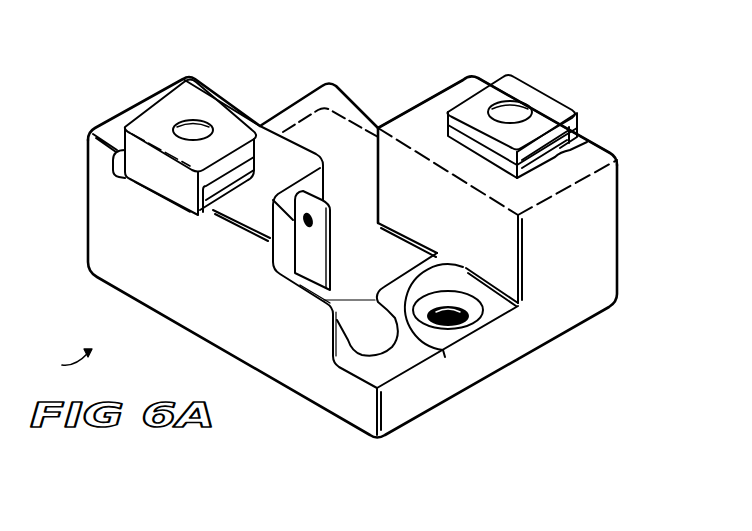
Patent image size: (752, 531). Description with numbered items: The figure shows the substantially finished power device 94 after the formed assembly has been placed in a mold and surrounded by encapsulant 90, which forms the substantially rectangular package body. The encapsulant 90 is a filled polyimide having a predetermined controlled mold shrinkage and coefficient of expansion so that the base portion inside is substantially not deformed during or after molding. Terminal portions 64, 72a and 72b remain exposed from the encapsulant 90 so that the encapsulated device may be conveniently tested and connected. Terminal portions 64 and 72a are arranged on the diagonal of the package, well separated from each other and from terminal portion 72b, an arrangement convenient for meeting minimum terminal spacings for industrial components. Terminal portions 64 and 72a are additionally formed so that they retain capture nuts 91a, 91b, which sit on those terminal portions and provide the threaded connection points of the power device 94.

The encapsulant 90 is at (618, 228).
The terminal portion 64 is at (508, 85).
The terminal portion 72a is at (157, 125).
The terminal portion 72b is at (330, 249).
The capture nut 91a is at (550, 157).
The capture nut 91b is at (240, 167).
The power device 94 is at (60, 354).